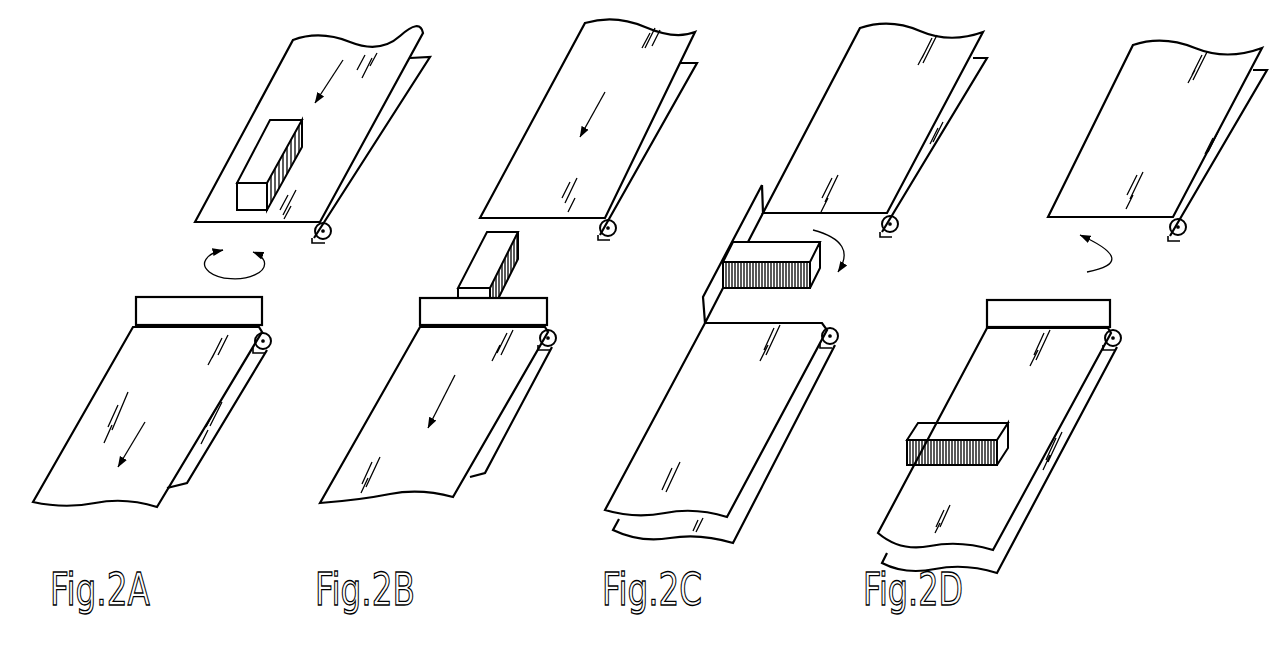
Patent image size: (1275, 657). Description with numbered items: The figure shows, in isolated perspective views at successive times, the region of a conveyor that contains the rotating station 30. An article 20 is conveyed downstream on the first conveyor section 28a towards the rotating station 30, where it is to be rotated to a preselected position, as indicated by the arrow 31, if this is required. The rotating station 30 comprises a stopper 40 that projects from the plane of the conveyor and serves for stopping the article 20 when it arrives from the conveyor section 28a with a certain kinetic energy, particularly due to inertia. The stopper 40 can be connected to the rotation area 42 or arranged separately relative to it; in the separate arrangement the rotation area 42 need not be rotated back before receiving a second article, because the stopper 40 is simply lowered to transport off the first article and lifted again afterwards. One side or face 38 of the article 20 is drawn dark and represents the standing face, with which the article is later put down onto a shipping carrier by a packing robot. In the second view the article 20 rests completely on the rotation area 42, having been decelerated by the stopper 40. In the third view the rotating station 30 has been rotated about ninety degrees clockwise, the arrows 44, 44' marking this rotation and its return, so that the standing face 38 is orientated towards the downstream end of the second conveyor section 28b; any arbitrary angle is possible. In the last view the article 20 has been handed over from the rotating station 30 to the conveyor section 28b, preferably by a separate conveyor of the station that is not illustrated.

In FIG. 2A, the article 20 is at (257, 147).
In FIG. 2B, the article 20 is at (488, 265).
In FIG. 2C, the article 20 is at (771, 265).
In FIG. 2D, the article 20 is at (968, 420).
In FIG. 2A, the first conveyor section 28a is at (273, 78).
In FIG. 2B, the first conveyor section 28a is at (557, 75).
In FIG. 2C, the first conveyor section 28a is at (873, 118).
In FIG. 2D, the first conveyor section 28a is at (1097, 117).
In FIG. 2A, the second conveyor section 28b is at (90, 403).
In FIG. 2B, the second conveyor section 28b is at (660, 437).
In FIG. 2C, the second conveyor section 28b is at (660, 437).
In FIG. 2D, the second conveyor section 28b is at (960, 370).
In FIG. 2A, the rotating station 30 is at (150, 240).
In FIG. 2D, the rotating station 30 is at (1140, 283).
In FIG. 2A, the arrow 31 is at (263, 260).
In FIG. 2A, the standing face 38 is at (308, 135).
In FIG. 2D, the standing face 38 is at (937, 470).
In FIG. 2A, the stopper 40 is at (136, 305).
In FIG. 2B, the stopper 40 is at (427, 298).
In FIG. 2C, the stopper 40 is at (752, 203).
In FIG. 2D, the stopper 40 is at (987, 302).
In FIG. 2B, the rotation area 42 is at (556, 271).
In FIG. 2D, the rotation area 42 is at (1057, 283).
In FIG. 2C, the tilting direction of plate 44 is at (861, 256).
In FIG. 2D, the return tilting direction of plate 44' is at (1143, 257).